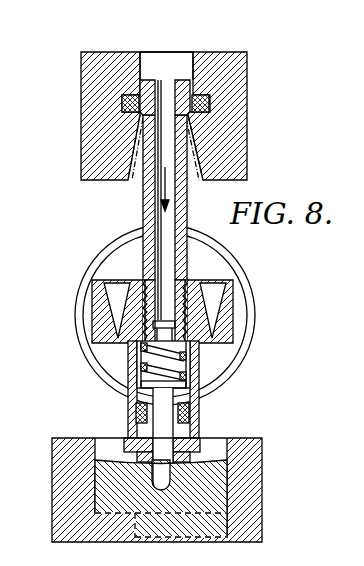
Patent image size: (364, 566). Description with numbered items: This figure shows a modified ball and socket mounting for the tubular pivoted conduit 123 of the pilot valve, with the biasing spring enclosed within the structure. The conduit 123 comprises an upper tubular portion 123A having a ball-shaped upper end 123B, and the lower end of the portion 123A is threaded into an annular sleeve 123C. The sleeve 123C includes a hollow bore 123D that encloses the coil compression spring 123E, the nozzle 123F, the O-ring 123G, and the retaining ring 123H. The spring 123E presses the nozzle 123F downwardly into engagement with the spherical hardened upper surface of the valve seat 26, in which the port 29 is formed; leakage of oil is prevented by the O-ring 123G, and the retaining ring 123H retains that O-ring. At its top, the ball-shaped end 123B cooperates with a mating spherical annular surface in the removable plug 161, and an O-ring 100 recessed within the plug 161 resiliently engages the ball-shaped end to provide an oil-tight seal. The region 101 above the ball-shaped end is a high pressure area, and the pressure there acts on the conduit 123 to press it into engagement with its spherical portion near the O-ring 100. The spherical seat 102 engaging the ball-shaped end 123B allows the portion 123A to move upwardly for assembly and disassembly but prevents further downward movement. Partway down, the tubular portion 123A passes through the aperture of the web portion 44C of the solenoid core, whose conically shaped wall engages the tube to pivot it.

The high pressure region 101 is at (156, 62).
The ball-shaped upper end 123B is at (186, 78).
The removable plug 161 is at (226, 62).
The O-ring 100 is at (212, 103).
The spherical seat 102 is at (192, 120).
The upper tubular portion 123A is at (182, 197).
The tubular pivoted conduit 123 is at (143, 223).
The annular sleeve 123C is at (134, 282).
The apertured web portion 44C is at (220, 290).
The coil compression spring 123E is at (199, 363).
The hollow bore 123D is at (137, 379).
The nozzle 123F is at (133, 410).
The O-ring 123G is at (191, 412).
The retaining ring 123H is at (184, 452).
The valve seat 26 is at (104, 490).
The port 29 is at (224, 478).